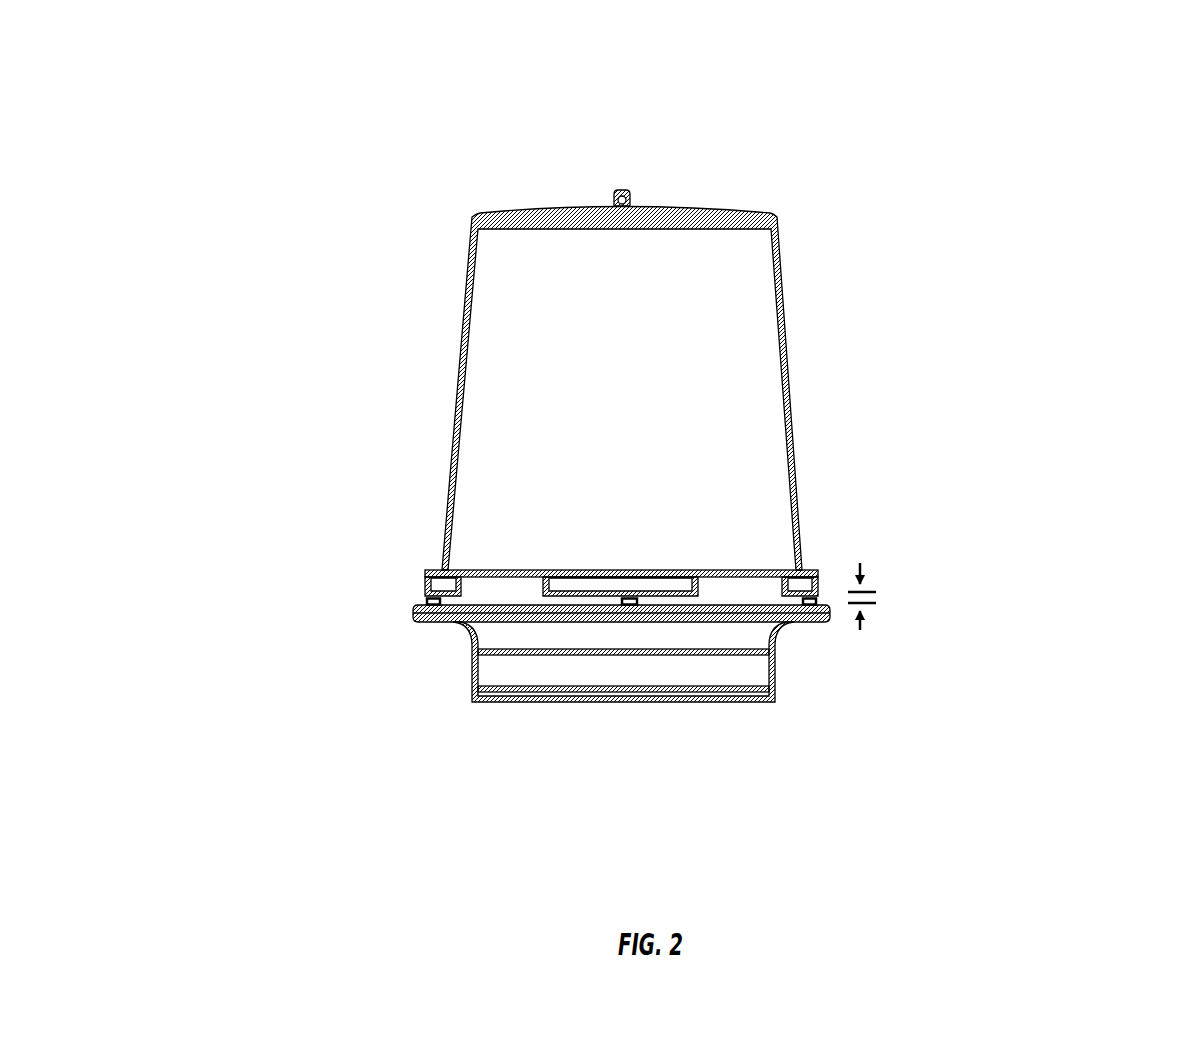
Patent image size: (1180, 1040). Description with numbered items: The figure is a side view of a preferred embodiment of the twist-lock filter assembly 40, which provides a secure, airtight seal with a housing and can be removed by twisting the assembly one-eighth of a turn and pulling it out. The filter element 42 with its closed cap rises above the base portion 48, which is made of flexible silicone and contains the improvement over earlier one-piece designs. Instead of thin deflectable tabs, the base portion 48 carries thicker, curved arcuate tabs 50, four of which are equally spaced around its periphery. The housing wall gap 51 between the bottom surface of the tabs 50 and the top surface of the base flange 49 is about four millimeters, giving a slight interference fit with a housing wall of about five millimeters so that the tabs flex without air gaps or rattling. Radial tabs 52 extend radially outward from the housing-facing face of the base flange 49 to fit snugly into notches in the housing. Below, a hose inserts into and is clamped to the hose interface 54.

The twist-lock filter assembly 40 is at (1042, 148).
The filter element 42 is at (772, 312).
The base portion 48 is at (355, 703).
The base flange 49 is at (830, 614).
The arcuate tabs 50 is at (818, 569).
The housing wall gap 51 is at (873, 596).
The radial tabs 52 is at (415, 595).
The hose interface 54 is at (763, 678).